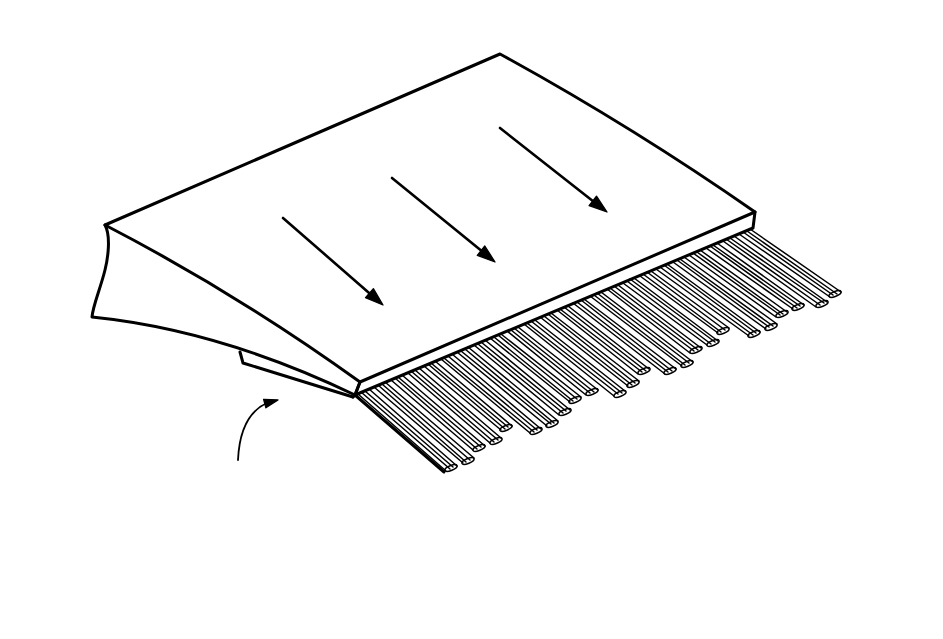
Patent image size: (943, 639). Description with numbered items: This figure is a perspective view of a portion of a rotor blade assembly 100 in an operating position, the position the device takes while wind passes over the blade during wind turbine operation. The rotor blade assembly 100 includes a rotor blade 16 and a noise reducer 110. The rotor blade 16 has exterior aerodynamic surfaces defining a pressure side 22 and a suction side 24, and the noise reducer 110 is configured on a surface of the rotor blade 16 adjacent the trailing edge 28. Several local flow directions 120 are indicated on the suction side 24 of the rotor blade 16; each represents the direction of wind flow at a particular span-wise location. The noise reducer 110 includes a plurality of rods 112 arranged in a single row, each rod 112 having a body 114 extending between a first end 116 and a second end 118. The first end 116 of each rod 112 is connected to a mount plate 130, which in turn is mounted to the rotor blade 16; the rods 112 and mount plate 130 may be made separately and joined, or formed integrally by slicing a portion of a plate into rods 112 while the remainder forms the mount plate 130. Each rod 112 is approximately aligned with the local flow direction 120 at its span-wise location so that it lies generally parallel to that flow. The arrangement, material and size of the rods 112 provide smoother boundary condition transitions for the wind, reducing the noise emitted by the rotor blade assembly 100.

The rotor blade assembly 100 is at (223, 90).
The rotor blade 16 is at (148, 190).
The suction side 24 is at (425, 118).
The pressure side 22 is at (135, 325).
The local flow direction 120 is at (350, 232).
The trailing edge 28 is at (753, 228).
The mount plate 130 is at (243, 363).
The noise reducer 110 is at (245, 450).
The first end 116 is at (333, 400).
The rod 112 is at (382, 422).
The second end 118 is at (445, 474).
The body 114 is at (423, 460).